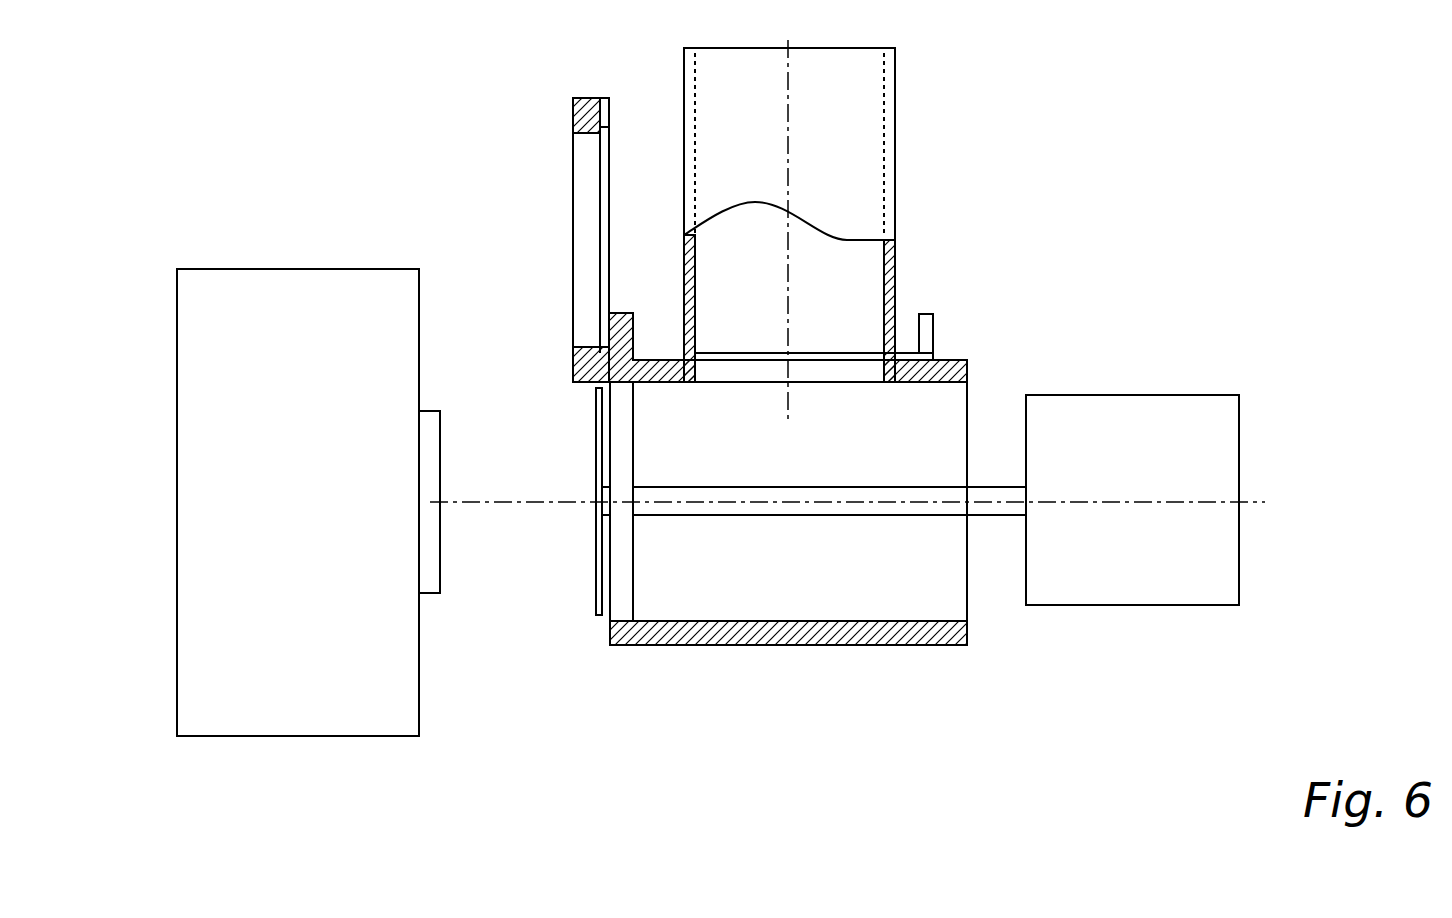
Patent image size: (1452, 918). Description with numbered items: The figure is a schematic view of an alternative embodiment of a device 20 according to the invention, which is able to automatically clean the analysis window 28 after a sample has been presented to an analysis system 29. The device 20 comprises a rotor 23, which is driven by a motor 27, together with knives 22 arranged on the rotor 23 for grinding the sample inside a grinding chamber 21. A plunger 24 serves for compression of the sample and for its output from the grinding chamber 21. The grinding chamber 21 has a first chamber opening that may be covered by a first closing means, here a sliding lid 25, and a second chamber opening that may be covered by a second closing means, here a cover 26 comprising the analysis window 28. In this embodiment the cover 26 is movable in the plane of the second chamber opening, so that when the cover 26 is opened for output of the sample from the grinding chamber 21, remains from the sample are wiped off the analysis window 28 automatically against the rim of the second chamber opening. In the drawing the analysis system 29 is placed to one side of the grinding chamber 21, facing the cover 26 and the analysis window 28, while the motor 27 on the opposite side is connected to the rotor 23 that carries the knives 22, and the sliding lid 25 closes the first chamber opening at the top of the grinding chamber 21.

The device 20 is at (1044, 235).
The grinding chamber 21 is at (789, 463).
The knives 22 is at (597, 610).
The rotor 23 is at (768, 517).
The plunger 24 is at (633, 452).
The sliding lid 25 is at (778, 352).
The cover 26 is at (573, 207).
The motor 27 is at (1129, 395).
The analysis window 28 is at (610, 210).
The analysis system 29 is at (283, 269).